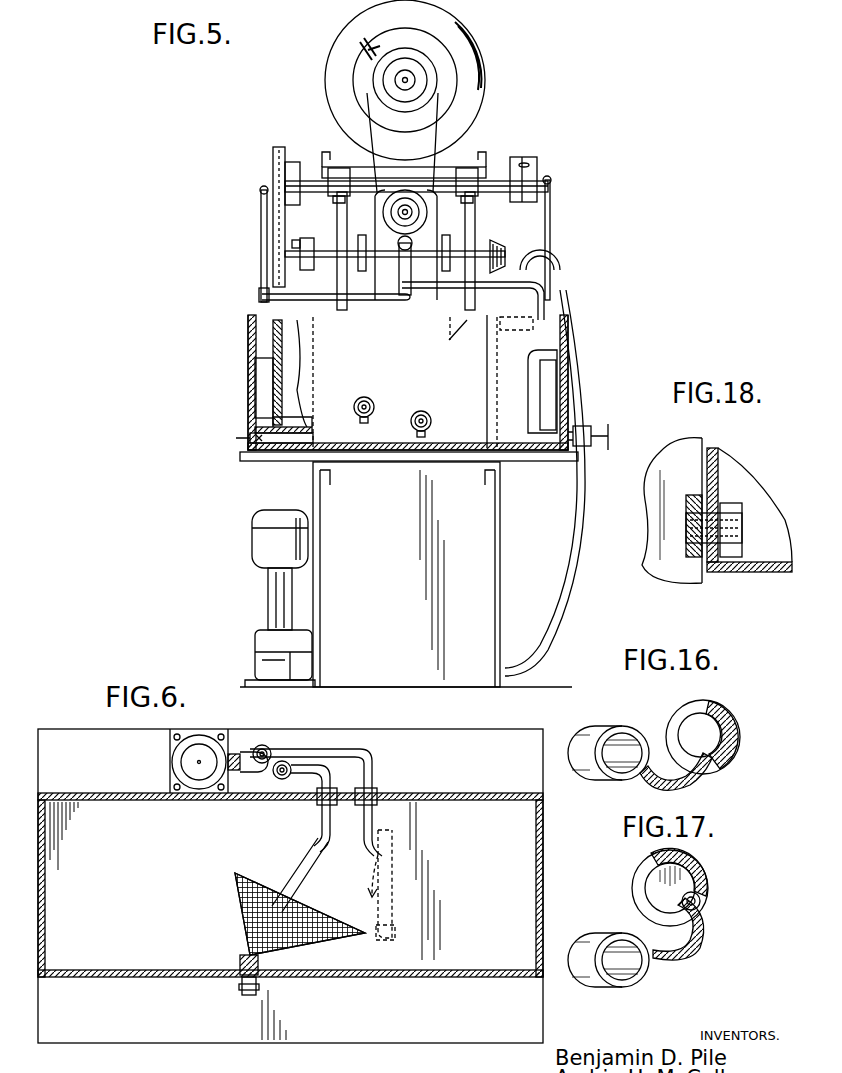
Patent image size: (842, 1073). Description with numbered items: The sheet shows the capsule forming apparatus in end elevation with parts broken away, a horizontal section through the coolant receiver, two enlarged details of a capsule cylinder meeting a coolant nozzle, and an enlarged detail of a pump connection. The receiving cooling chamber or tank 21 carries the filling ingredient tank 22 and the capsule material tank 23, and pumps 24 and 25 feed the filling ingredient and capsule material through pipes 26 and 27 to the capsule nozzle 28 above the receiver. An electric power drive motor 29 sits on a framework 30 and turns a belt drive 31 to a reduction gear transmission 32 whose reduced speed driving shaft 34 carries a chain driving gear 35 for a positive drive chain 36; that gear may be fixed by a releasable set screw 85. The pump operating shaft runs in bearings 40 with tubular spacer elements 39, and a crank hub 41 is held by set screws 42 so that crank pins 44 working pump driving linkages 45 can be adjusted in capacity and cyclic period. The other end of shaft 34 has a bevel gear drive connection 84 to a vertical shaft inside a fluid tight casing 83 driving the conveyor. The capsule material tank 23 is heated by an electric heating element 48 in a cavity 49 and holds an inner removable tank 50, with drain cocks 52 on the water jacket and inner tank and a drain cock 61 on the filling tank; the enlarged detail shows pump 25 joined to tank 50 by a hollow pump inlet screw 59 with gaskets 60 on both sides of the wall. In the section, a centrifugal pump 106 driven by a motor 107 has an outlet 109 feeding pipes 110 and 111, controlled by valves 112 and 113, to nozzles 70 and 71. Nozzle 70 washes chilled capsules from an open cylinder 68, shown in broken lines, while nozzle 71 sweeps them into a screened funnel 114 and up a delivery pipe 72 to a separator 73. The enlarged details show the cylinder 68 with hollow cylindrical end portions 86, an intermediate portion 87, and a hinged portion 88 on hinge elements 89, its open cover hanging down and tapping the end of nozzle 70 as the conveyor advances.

In FIG. 5, the receiving cooling chamber or tank 21 is at (403, 595).
In FIG. 6, the receiving cooling chamber or tank 21 is at (480, 790).
In FIG. 5, the filling ingredient tank 22 is at (563, 317).
In FIG. 5, the capsule material tank 23 is at (300, 330).
In FIG. 5, the pump 24 is at (548, 372).
In FIG. 5, the pump 25 is at (262, 368).
In FIG. 18, the pump 25 is at (662, 450).
In FIG. 5, the pipe 26 is at (540, 295).
In FIG. 5, the pipe 27 is at (322, 310).
In FIG. 5, the capsule nozzle 28 is at (392, 312).
In FIG. 5, the electric power drive motor 29 is at (453, 26).
In FIG. 5, the framework 30 is at (483, 112).
In FIG. 5, the belt drive 31 is at (360, 112).
In FIG. 5, the reduction gear transmission 32 is at (427, 244).
In FIG. 5, the reduced speed driving shaft 34 is at (313, 258).
In FIG. 5, the chain driving gear 35 is at (300, 243).
In FIG. 5, the positive drive chain 36 is at (273, 175).
In FIG. 5, the tubular spacer elements 39 is at (308, 178).
In FIG. 5, the bearings 40 is at (483, 207).
In FIG. 5, the crank hub 41 is at (548, 167).
In FIG. 5, the set screws 42 is at (291, 162).
In FIG. 5, the crank pins 44 is at (262, 190).
In FIG. 5, the pump driving linkages 45 is at (262, 249).
In FIG. 5, the electric heating element 48 is at (298, 443).
In FIG. 5, the cavity 49 is at (257, 457).
In FIG. 5, the inner removable tank 50 is at (287, 380).
In FIG. 18, the inner removable tank 50 is at (757, 562).
In FIG. 5, the drain cocks 52 is at (416, 413).
In FIG. 18, the hollow pump inlet screw 59 is at (740, 503).
In FIG. 18, the gaskets 60 is at (720, 503).
In FIG. 5, the drain cock 61 is at (592, 426).
In FIG. 6, the cylinders 68 is at (425, 932).
In FIG. 16, the cylinders 68 is at (728, 712).
In FIG. 17, the cylinders 68 is at (708, 882).
In FIG. 6, the nozzle 70 is at (372, 850).
In FIG. 16, the nozzle 70 is at (602, 781).
In FIG. 17, the nozzle 70 is at (607, 988).
In FIG. 6, the nozzle 71 is at (303, 875).
In FIG. 5, the delivery pipe 72 is at (573, 510).
In FIG. 6, the delivery pipe 72 is at (242, 990).
In FIG. 5, the separator 73 is at (507, 283).
In FIG. 5, the fluid tight casing 83 is at (545, 610).
In FIG. 5, the bevel gear drive connection 84 is at (502, 243).
In FIG. 5, the set screw 85 is at (288, 247).
In FIG. 16, the hollow cylindrical end portions 86 is at (665, 724).
In FIG. 17, the hollow cylindrical end portions 86 is at (643, 900).
In FIG. 16, the intermediate portion 87 is at (738, 752).
In FIG. 17, the intermediate portion 87 is at (700, 868).
In FIG. 16, the hinged portion 88 is at (707, 787).
In FIG. 17, the hinged portion 88 is at (705, 945).
In FIG. 17, the hinge elements 89 is at (700, 897).
In FIG. 5, the centrifugal pump 106 is at (262, 658).
In FIG. 5, the motor 107 is at (260, 537).
In FIG. 6, the motor 107 is at (198, 742).
In FIG. 6, the outlet 109 is at (238, 752).
In FIG. 6, the pipe 110 is at (343, 752).
In FIG. 6, the pipe 111 is at (333, 778).
In FIG. 6, the valve 112 is at (270, 747).
In FIG. 6, the valve 113 is at (292, 757).
In FIG. 6, the screened funnel 114 is at (337, 943).